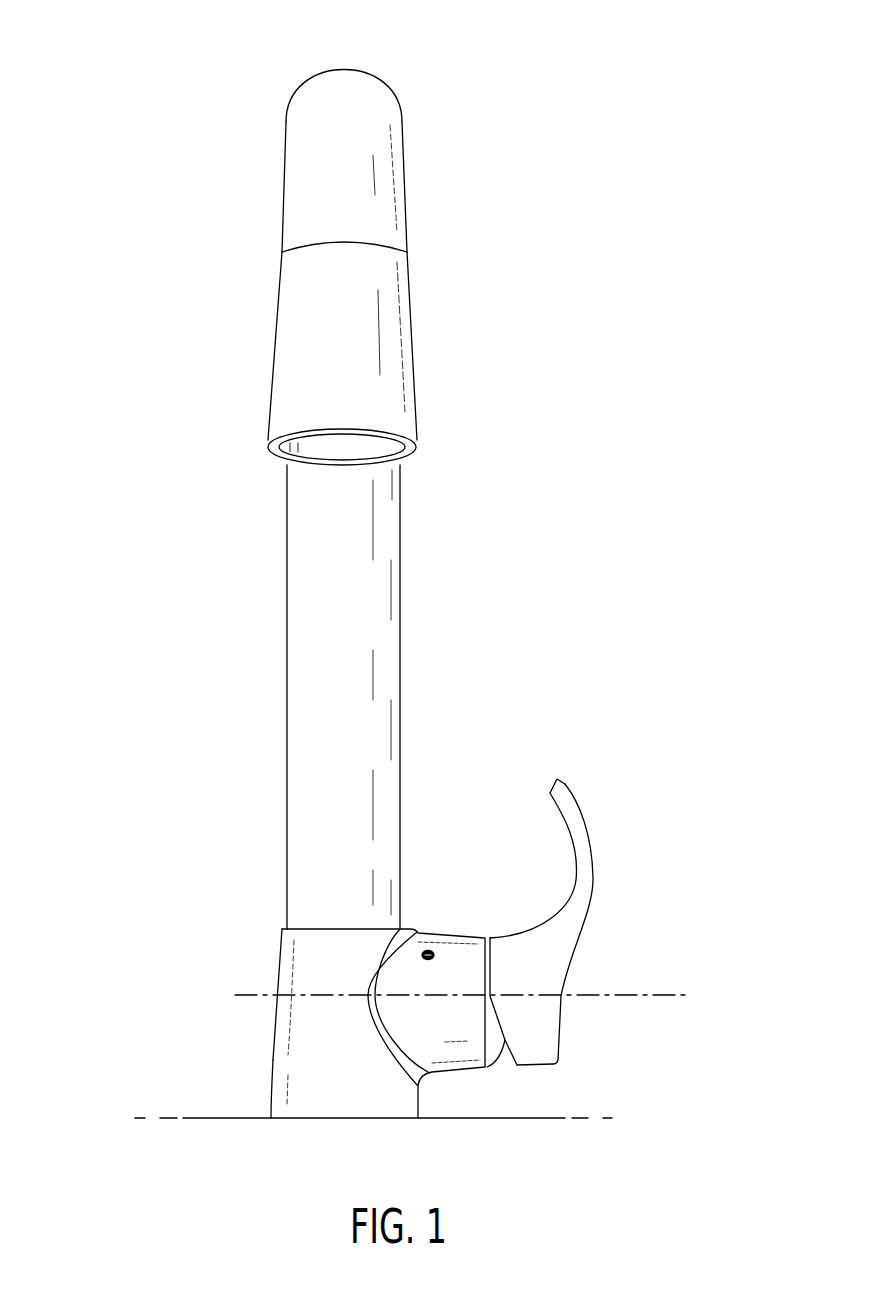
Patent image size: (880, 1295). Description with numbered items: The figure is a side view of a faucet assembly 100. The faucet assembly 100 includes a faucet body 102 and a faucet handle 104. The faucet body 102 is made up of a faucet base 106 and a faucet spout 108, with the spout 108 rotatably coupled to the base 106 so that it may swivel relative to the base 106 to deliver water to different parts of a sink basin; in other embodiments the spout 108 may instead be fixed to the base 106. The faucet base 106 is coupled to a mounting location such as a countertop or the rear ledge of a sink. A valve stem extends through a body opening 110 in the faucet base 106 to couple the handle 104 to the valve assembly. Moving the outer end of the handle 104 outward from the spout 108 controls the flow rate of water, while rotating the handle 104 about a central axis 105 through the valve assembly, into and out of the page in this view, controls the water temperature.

The faucet assembly 100 is at (190, 64).
The faucet body 102 is at (312, 977).
The faucet handle 104 is at (552, 955).
The central axis 105 is at (655, 995).
The faucet base 106 is at (275, 1092).
The faucet spout 108 is at (382, 612).
The body opening 110 is at (506, 1070).